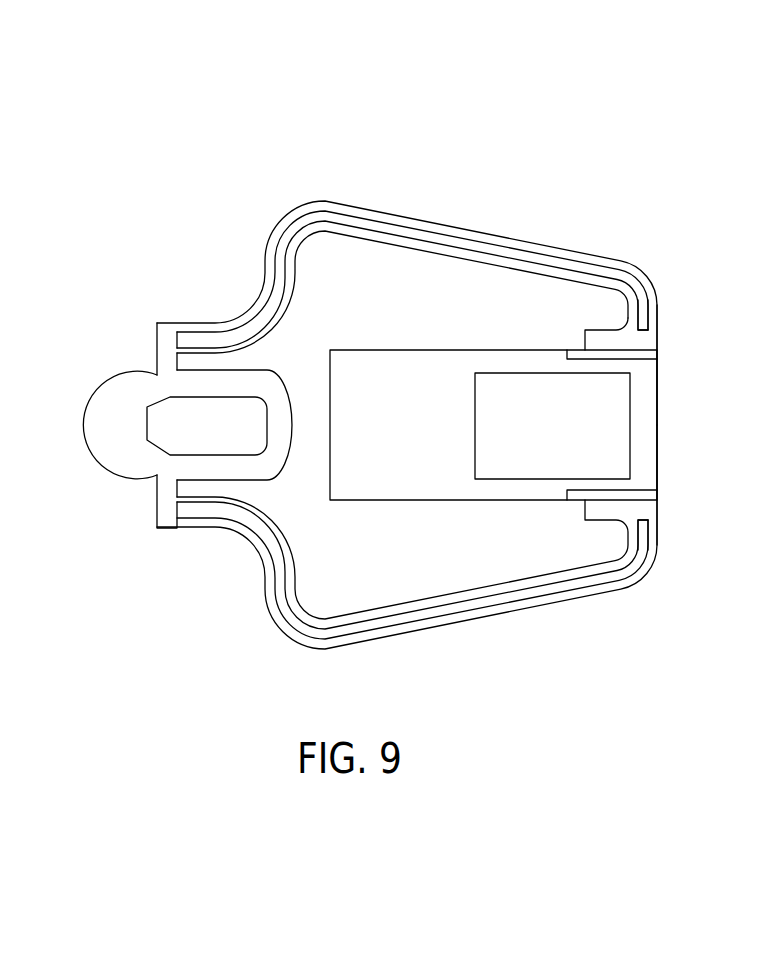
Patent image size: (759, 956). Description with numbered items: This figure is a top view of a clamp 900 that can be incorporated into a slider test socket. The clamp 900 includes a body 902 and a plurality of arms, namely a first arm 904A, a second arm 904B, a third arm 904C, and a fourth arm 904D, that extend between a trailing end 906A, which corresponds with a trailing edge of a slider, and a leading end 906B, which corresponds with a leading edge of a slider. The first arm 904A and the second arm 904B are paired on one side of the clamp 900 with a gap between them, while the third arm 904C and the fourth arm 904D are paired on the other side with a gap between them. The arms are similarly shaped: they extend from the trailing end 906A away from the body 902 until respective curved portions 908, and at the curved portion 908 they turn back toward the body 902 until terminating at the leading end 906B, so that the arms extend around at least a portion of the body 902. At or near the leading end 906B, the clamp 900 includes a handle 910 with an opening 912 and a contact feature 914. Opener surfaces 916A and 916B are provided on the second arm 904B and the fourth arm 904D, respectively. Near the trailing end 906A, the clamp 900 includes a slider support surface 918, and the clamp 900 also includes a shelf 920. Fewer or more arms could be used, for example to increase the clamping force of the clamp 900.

The clamp 900 is at (238, 143).
The body 902 is at (645, 357).
The first arm 904A is at (595, 262).
The second arm 904B is at (518, 265).
The third arm 904C is at (523, 603).
The fourth arm 904D is at (438, 602).
The trailing end 906A is at (658, 441).
The leading end 906B is at (156, 350).
The curved portion 908 is at (303, 205).
The handle 910 is at (134, 410).
The opening 912 is at (184, 435).
The contact feature 914 is at (293, 403).
The opener surface 916A is at (624, 311).
The opener surface 916B is at (628, 534).
The slider support surface 918 is at (583, 343).
The shelf 920 is at (398, 363).